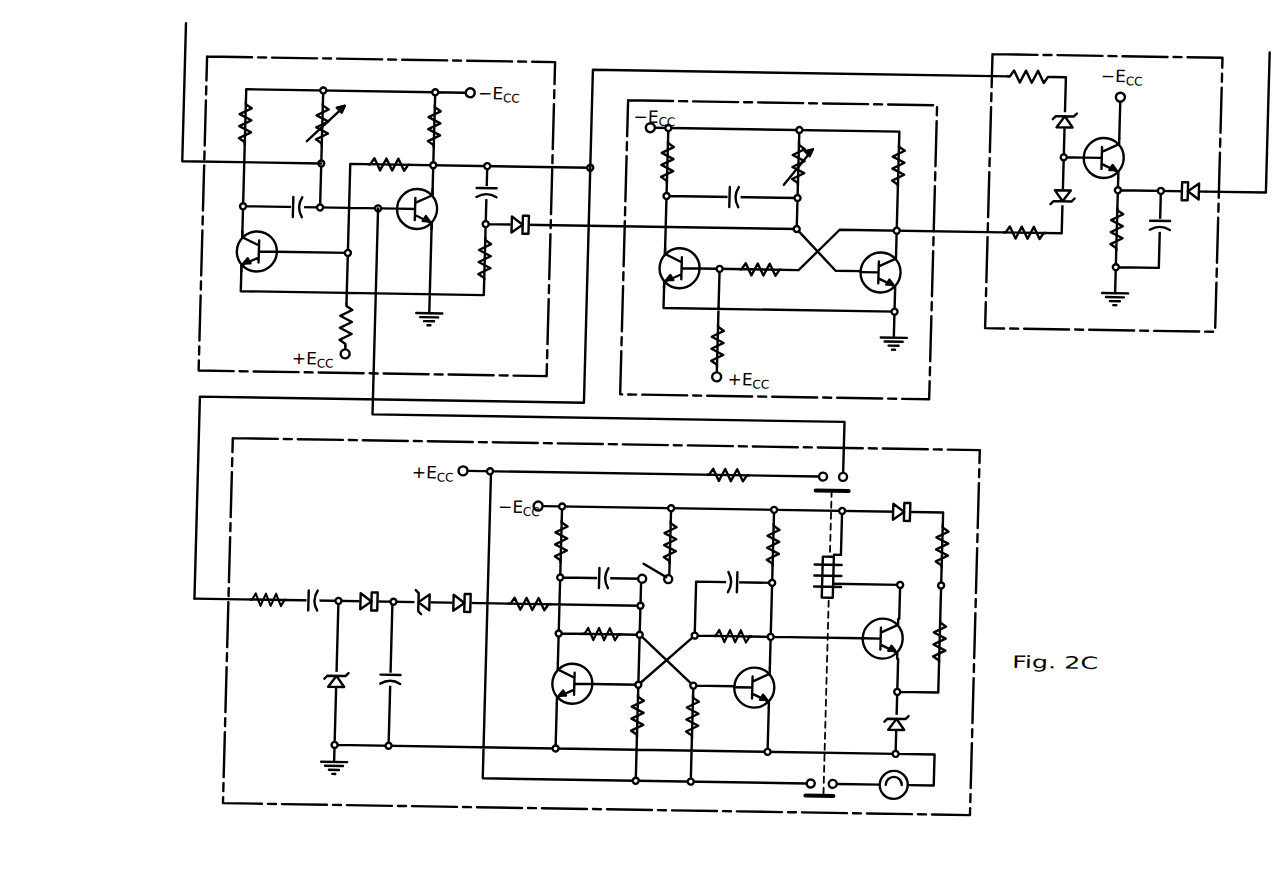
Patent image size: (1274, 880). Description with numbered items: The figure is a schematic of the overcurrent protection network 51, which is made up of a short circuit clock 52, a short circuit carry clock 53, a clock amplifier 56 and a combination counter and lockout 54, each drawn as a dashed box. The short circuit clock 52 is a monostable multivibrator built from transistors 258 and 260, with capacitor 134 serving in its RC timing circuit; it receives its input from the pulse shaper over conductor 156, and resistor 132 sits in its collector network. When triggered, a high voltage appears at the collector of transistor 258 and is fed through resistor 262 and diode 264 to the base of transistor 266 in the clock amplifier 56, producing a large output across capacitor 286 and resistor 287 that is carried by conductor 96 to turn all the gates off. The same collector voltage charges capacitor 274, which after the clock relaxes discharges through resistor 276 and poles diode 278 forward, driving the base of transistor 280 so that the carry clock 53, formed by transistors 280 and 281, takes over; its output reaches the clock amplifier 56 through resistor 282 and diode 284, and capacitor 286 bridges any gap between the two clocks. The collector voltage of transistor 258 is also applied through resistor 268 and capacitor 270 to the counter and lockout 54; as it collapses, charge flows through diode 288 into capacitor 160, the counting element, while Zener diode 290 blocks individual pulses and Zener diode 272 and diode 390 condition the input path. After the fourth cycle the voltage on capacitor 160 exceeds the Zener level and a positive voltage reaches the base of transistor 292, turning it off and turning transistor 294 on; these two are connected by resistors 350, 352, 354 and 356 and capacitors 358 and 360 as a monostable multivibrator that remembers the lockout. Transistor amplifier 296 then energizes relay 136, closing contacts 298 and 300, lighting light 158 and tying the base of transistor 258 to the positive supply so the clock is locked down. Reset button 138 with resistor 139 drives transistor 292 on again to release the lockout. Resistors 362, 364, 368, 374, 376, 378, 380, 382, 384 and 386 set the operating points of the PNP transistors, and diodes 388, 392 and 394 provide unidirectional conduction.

The overcurrent protection network 51 is at (625, 60).
The short circuit clock 52 is at (198, 278).
The short circuit carry clock 53 is at (858, 102).
The combination counter and lockout 54 is at (305, 441).
The clock amplifier 56 is at (983, 206).
The conductor 96 is at (1260, 103).
The resistor 132 is at (247, 128).
The capacitor 134 is at (294, 187).
The relay 136 is at (847, 571).
The reset button 138 is at (666, 548).
The resistor 139 is at (684, 524).
The conductor 156 is at (176, 136).
The light 158 is at (900, 774).
The capacitor 160 is at (409, 683).
The transistor 258 is at (395, 232).
The transistor 260 is at (272, 268).
The resistor 262 is at (1010, 77).
The diode 264 is at (1047, 114).
The transistor 266 is at (1118, 146).
The resistor 268 is at (269, 589).
The capacitor 270 is at (314, 616).
The zener diode 272 is at (338, 685).
The capacitor 274 is at (489, 192).
The resistor 276 is at (490, 258).
The diode 278 is at (515, 233).
The transistor 280 is at (856, 276).
The transistor 281 is at (687, 258).
The resistor 282 is at (1022, 233).
The diode 284 is at (1047, 196).
The capacitor 286 is at (1159, 213).
The resistor 287 is at (1106, 233).
The diode 288 is at (371, 597).
The Zener diode 290 is at (424, 597).
The transistor 292 is at (783, 674).
The transistor 294 is at (562, 688).
The transistor amplifier 296 is at (896, 611).
The contact 298 is at (852, 476).
The contact 300 is at (819, 787).
The resistor 350 is at (605, 648).
The resistor 352 is at (741, 642).
The resistor 354 is at (650, 720).
The resistor 356 is at (710, 720).
The capacitor 358 is at (614, 553).
The capacitor 360 is at (744, 556).
The resistor 362 is at (345, 124).
The resistor 364 is at (441, 130).
The resistor 368 is at (389, 171).
The resistor 374 is at (758, 256).
The resistor 376 is at (728, 330).
The resistor 378 is at (561, 541).
The resistor 380 is at (531, 582).
The resistor 382 is at (801, 525).
The resistor 384 is at (941, 541).
The resistor 386 is at (940, 687).
The diode 388 is at (1188, 166).
The diode 390 is at (465, 615).
The diode 392 is at (901, 495).
The diode 394 is at (902, 713).